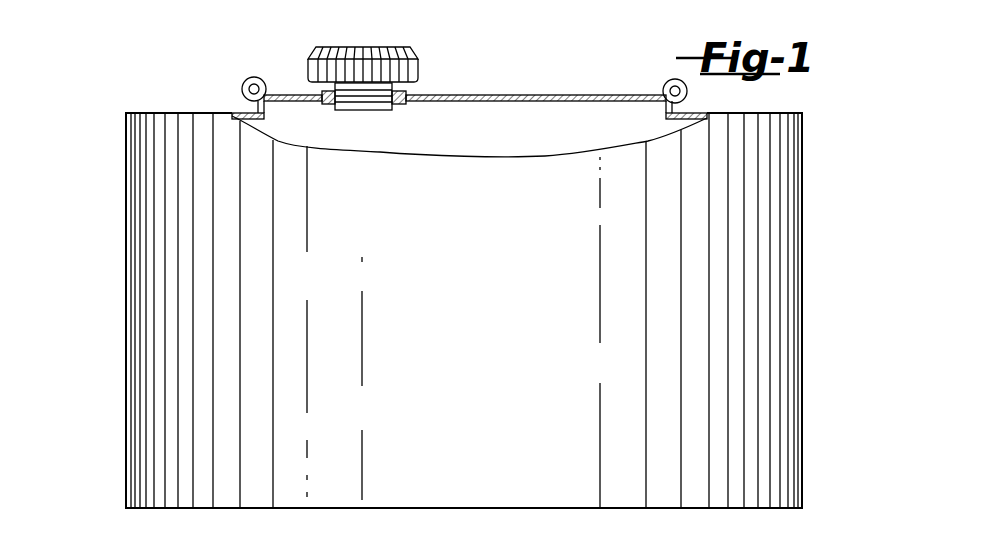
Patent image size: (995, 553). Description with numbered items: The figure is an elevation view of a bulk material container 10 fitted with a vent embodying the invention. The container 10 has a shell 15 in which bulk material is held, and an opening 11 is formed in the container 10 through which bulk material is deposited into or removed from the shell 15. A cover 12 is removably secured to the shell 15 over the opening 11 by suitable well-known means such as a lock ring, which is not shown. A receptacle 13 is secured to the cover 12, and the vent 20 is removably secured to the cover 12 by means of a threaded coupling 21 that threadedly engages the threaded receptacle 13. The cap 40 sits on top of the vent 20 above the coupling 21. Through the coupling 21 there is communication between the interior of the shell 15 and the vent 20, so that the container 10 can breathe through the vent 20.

The container 10 is at (103, 162).
The opening 11 is at (268, 118).
The cover 12 is at (570, 95).
The receptacle 13 is at (402, 106).
The shell 15 is at (481, 338).
The vent 20 is at (305, 62).
The threaded coupling 21 is at (355, 105).
The cap 40 is at (420, 66).